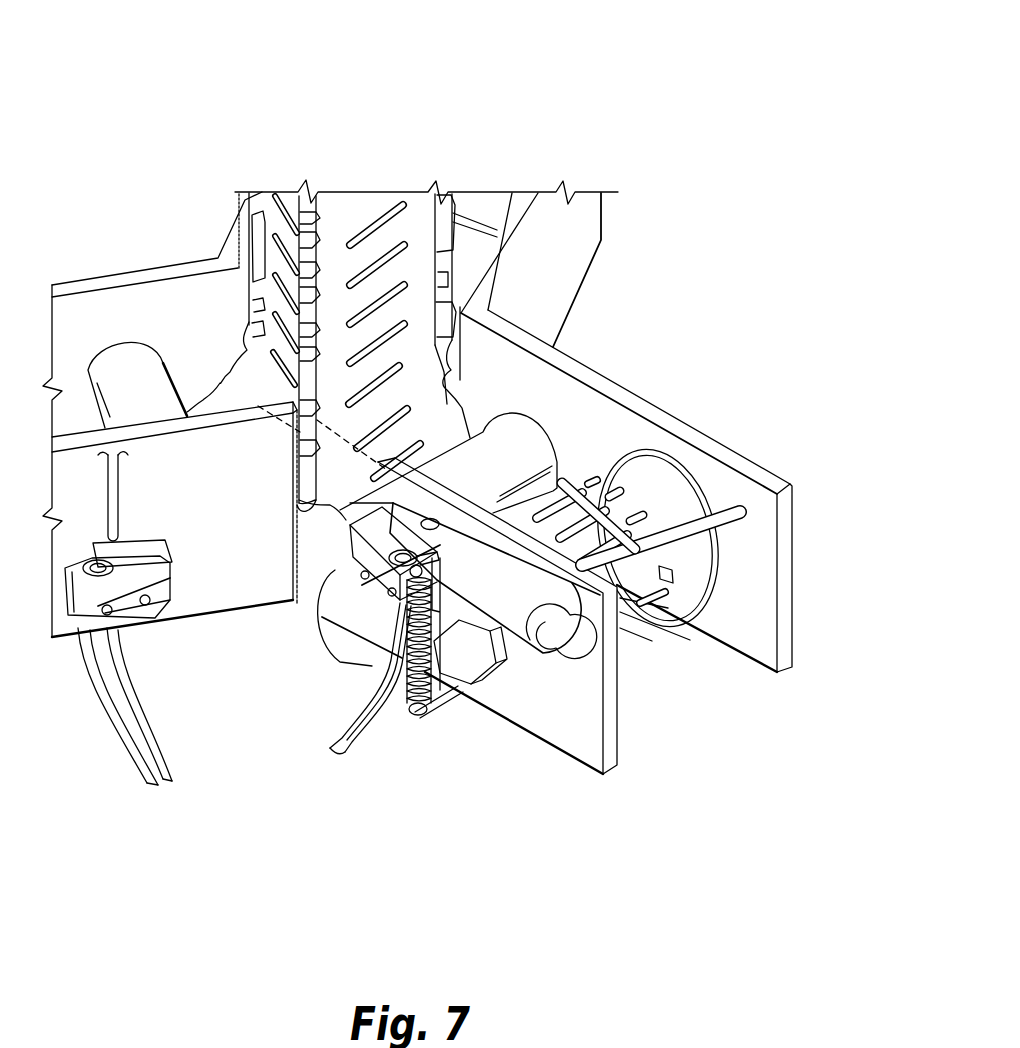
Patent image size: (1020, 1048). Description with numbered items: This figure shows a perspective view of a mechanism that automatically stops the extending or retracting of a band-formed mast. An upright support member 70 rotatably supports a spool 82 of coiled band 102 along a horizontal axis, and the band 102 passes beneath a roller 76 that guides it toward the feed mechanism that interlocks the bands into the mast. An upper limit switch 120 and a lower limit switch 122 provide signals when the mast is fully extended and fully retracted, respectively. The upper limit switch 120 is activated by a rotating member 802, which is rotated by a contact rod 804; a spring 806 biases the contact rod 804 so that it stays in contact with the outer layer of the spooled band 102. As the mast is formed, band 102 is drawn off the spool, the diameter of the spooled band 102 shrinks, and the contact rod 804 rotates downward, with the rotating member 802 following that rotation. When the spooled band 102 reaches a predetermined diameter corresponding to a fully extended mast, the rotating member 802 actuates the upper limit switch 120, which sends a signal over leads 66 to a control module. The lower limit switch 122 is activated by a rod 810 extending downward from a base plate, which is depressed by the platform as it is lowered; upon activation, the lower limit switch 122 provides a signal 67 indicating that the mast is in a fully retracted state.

The coiled band 102 is at (338, 212).
The roller 76 is at (147, 407).
The spool 82 is at (653, 458).
The contact rod 804 is at (607, 523).
The upright support member 70 is at (803, 567).
The rotating member 802 is at (549, 651).
The spring 806 is at (403, 700).
The upper limit switch 120 is at (340, 627).
The lower limit switch 122 is at (170, 615).
The leads 66 is at (350, 714).
The signal 67 is at (135, 773).
The rod 810 is at (123, 493).